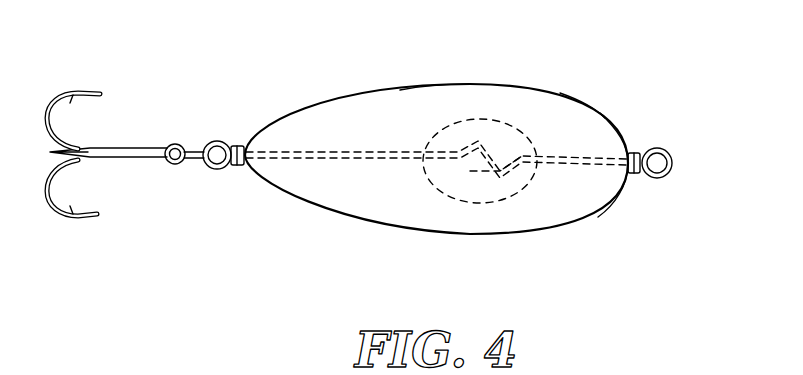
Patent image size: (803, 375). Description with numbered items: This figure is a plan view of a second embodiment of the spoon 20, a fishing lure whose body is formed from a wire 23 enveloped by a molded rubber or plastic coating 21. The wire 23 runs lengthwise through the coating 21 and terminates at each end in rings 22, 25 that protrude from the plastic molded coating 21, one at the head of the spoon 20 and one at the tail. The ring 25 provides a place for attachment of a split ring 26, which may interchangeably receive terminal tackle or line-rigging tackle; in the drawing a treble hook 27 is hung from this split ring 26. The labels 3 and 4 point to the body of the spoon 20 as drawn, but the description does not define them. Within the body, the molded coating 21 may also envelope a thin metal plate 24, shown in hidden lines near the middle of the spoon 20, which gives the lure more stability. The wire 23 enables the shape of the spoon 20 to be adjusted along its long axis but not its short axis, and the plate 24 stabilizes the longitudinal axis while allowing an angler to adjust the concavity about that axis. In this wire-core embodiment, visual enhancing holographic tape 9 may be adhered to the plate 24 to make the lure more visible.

The spoon body 3 is at (300, 100).
The spoon body rear portion 4 is at (632, 203).
The visual enhancing holographic tape 9 is at (460, 185).
The spoon 20 is at (600, 70).
The molded rubber or plastic coating 21 is at (605, 118).
The ring 22 is at (670, 150).
The wire 23 is at (490, 143).
The thin metal plate 24 is at (515, 195).
The ring 25 is at (217, 140).
The split ring 26 is at (193, 160).
The treble hook 27 is at (73, 93).